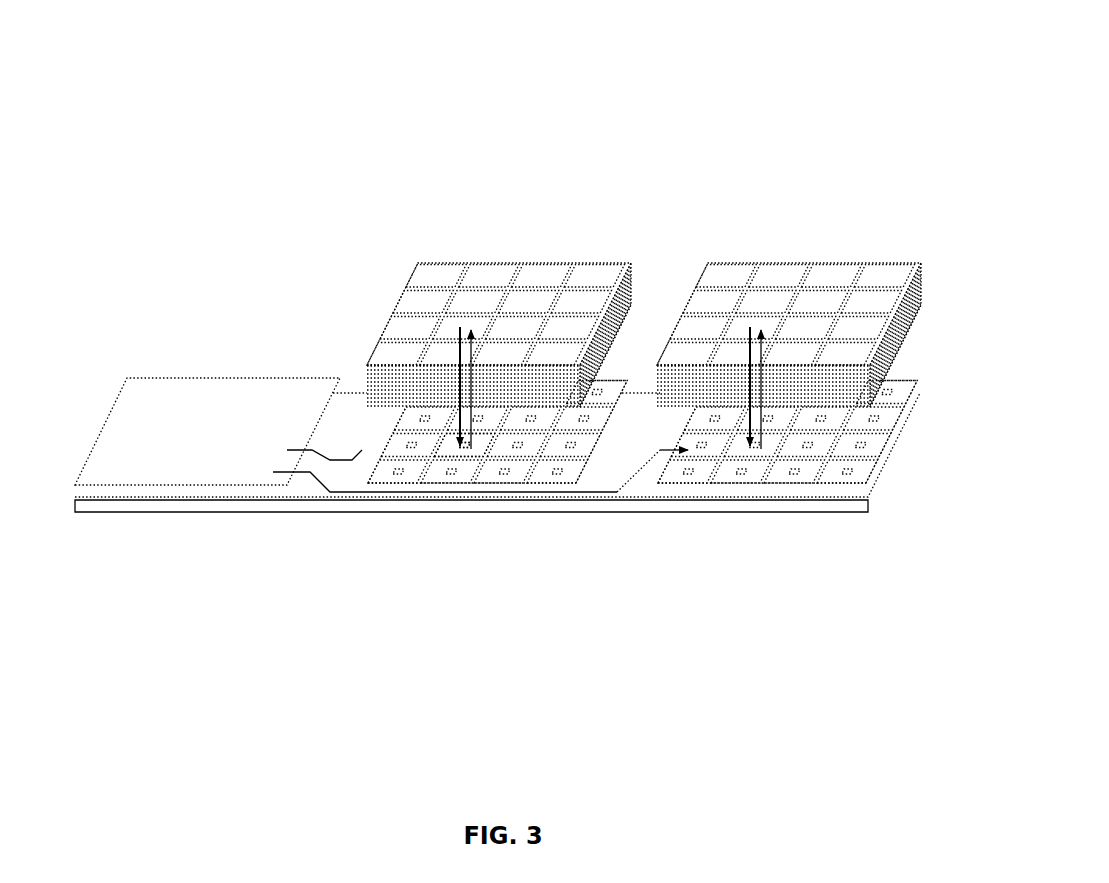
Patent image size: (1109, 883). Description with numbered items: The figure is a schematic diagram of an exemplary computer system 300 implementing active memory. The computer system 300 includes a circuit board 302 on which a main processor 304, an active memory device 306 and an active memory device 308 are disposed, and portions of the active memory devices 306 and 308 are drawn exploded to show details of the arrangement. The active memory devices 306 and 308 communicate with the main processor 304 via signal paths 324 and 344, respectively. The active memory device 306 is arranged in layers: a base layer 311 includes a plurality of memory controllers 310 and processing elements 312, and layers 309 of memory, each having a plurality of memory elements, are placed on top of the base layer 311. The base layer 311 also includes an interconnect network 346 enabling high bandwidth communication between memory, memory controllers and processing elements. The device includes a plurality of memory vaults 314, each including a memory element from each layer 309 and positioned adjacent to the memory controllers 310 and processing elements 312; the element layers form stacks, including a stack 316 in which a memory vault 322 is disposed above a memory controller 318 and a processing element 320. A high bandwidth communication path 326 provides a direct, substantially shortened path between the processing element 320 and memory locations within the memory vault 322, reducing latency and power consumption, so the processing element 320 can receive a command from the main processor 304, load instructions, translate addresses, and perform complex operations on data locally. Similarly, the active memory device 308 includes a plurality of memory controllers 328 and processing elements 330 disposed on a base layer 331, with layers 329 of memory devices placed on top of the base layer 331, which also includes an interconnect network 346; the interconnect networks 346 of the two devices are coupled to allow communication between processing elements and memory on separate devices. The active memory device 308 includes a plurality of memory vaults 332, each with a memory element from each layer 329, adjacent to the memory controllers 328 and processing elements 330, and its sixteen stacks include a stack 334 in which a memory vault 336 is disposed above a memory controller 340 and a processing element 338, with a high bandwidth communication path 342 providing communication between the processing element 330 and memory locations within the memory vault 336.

The computer system 300 is at (395, 123).
The circuit board 302 is at (228, 510).
The main processor 304 is at (222, 443).
The active memory device 306 is at (429, 389).
The active memory device 308 is at (781, 374).
The layers 309 is at (365, 365).
The memory controllers 310 is at (510, 472).
The base layer 311 is at (514, 522).
The processing elements 312 is at (573, 470).
The memory vaults 314 is at (605, 298).
The stack 316 is at (437, 328).
The memory controller 318 is at (465, 448).
The processing element 320 is at (476, 450).
The memory vault 322 is at (448, 320).
The signal path 324 is at (392, 450).
The high bandwidth communication path 326 is at (457, 350).
The memory controllers 328 is at (792, 472).
The layers 329 is at (923, 258).
The processing elements 330 is at (858, 472).
The base layer 331 is at (792, 523).
The memory vaults 332 is at (893, 275).
The stack 334 is at (765, 322).
The memory vault 336 is at (747, 320).
The processing element 338 is at (763, 447).
The memory controller 340 is at (755, 445).
The high bandwidth communication path 342 is at (748, 343).
The signal path 344 is at (343, 492).
The interconnect network 346 is at (610, 420).